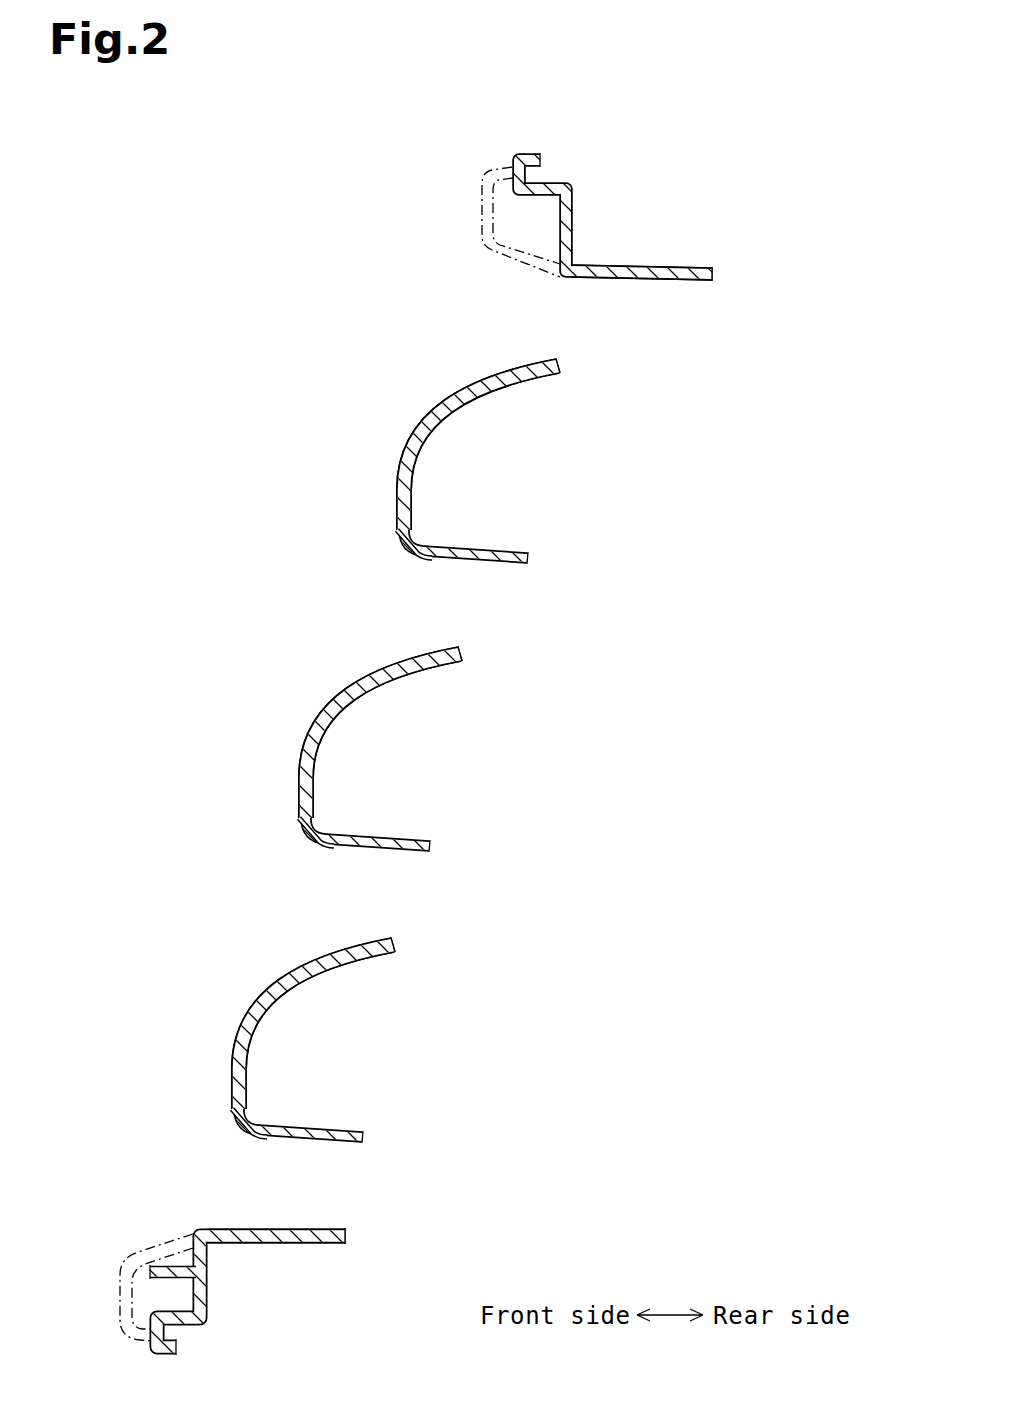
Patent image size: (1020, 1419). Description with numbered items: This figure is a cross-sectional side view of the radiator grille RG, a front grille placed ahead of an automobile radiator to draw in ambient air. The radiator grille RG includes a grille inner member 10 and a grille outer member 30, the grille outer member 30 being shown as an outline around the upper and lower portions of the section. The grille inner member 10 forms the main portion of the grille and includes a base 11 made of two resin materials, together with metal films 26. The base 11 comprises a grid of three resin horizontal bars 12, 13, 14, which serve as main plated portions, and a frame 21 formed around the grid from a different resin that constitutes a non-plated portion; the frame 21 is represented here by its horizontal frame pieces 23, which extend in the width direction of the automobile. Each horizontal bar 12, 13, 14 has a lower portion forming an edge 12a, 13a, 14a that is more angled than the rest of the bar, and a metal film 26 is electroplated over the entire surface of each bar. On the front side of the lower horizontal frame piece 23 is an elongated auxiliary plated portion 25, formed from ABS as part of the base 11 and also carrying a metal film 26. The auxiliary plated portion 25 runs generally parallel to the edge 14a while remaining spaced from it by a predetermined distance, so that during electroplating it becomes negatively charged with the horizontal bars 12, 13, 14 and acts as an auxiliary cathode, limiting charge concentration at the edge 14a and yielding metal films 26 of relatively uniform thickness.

The radiator grille RG is at (390, 747).
The grille outer member 30 is at (481, 201).
The grille inner member 10 is at (388, 202).
The base 11 is at (487, 785).
The frame 21 is at (487, 785).
The horizontal frame piece 23 is at (650, 281).
The metal film 26 is at (412, 435).
The horizontal bar 12 is at (398, 470).
The edge 12a is at (405, 543).
The horizontal bar 13 is at (348, 749).
The edge 13a is at (289, 841).
The horizontal bar 14 is at (281, 1040).
The edge 14a is at (222, 1132).
The auxiliary plated portion 25 is at (153, 1282).